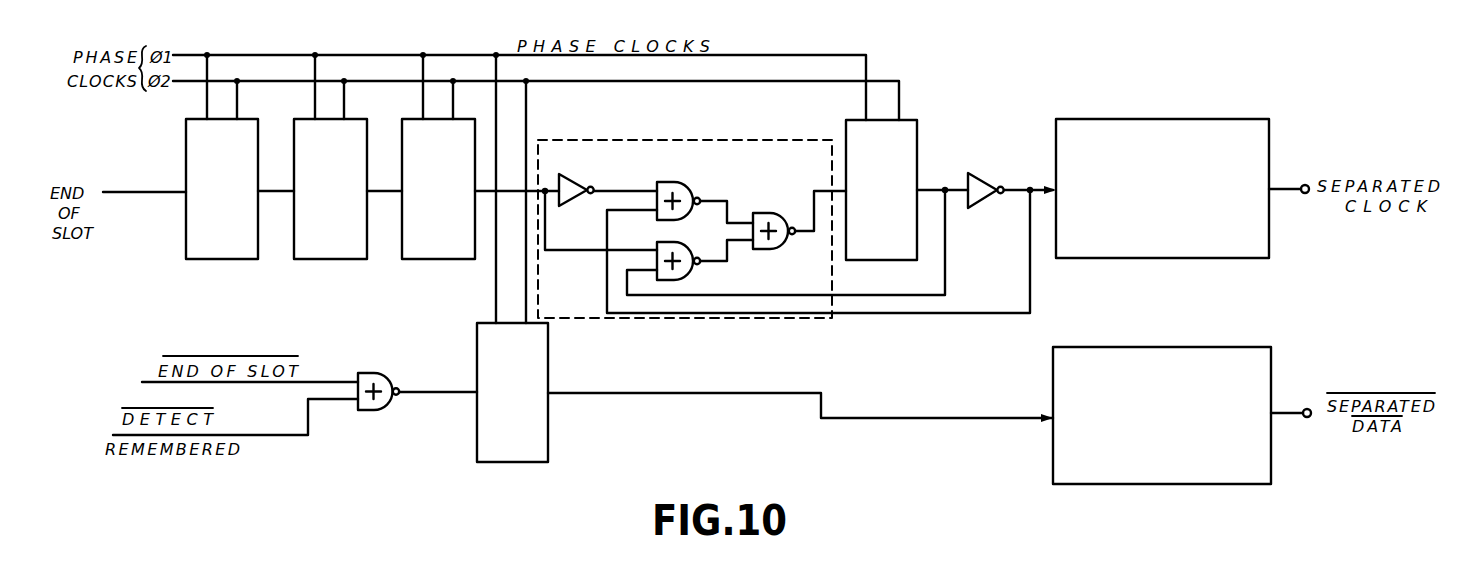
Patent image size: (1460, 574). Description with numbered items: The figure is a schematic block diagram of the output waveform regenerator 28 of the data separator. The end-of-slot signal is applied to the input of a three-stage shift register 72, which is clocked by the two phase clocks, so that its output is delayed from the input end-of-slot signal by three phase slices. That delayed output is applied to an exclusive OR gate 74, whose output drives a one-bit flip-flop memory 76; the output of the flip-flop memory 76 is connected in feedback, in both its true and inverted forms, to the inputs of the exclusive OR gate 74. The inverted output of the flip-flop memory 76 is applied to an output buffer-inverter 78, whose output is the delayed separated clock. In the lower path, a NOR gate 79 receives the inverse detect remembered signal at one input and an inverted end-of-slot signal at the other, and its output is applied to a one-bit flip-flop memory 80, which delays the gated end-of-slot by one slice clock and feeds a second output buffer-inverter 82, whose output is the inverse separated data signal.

The three-stage shift register 72 is at (475, 270).
The exclusive OR gate 74 is at (748, 139).
The one-bit flip-flop memory 76 is at (930, 156).
The output waveform regenerator 28 is at (967, 124).
The output buffer-inverter 78 is at (1213, 258).
The NOR gate 79 is at (375, 412).
The one-bit flip-flop memory 80 is at (548, 364).
The second output buffer-inverter 82 is at (1053, 473).